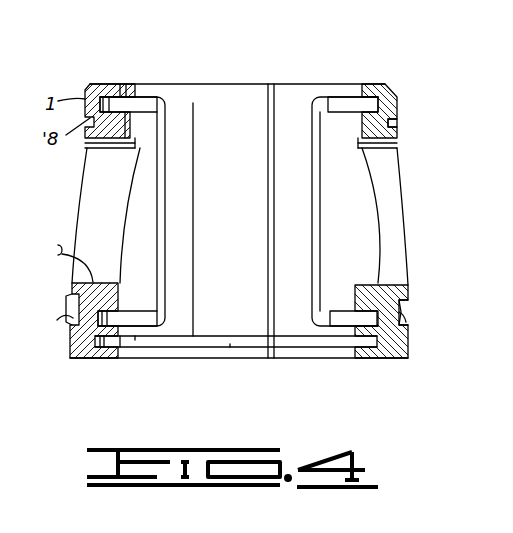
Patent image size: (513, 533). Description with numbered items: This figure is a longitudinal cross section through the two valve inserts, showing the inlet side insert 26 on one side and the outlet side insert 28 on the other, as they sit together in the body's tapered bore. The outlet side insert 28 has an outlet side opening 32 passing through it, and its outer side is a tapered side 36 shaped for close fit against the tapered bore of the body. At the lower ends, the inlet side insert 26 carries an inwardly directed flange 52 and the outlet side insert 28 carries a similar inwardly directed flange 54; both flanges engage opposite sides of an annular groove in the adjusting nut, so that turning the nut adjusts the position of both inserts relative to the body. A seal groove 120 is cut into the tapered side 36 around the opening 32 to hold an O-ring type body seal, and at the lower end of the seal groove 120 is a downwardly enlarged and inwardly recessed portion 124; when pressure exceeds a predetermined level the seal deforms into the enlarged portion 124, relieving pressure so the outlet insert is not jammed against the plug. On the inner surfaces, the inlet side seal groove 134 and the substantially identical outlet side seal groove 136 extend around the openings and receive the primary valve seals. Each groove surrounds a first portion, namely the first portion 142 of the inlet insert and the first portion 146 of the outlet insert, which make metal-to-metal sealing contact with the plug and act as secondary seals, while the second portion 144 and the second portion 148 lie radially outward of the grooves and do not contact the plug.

The inlet side insert 26 is at (81, 90).
The outlet side insert 28 is at (384, 96).
The outlet side opening 32 is at (381, 287).
The tapered side 36 is at (398, 100).
The inwardly directed flange 52 is at (98, 358).
The inwardly directed flange 54 is at (374, 360).
The seal groove 120 is at (398, 123).
The enlarged portion 124 is at (407, 318).
The inlet side seal groove 134 is at (151, 108).
The outlet side seal groove 136 is at (343, 107).
The first portion 142 is at (155, 182).
The second portion 144 is at (213, 110).
The first portion 146 is at (338, 137).
The second portion 148 is at (283, 110).